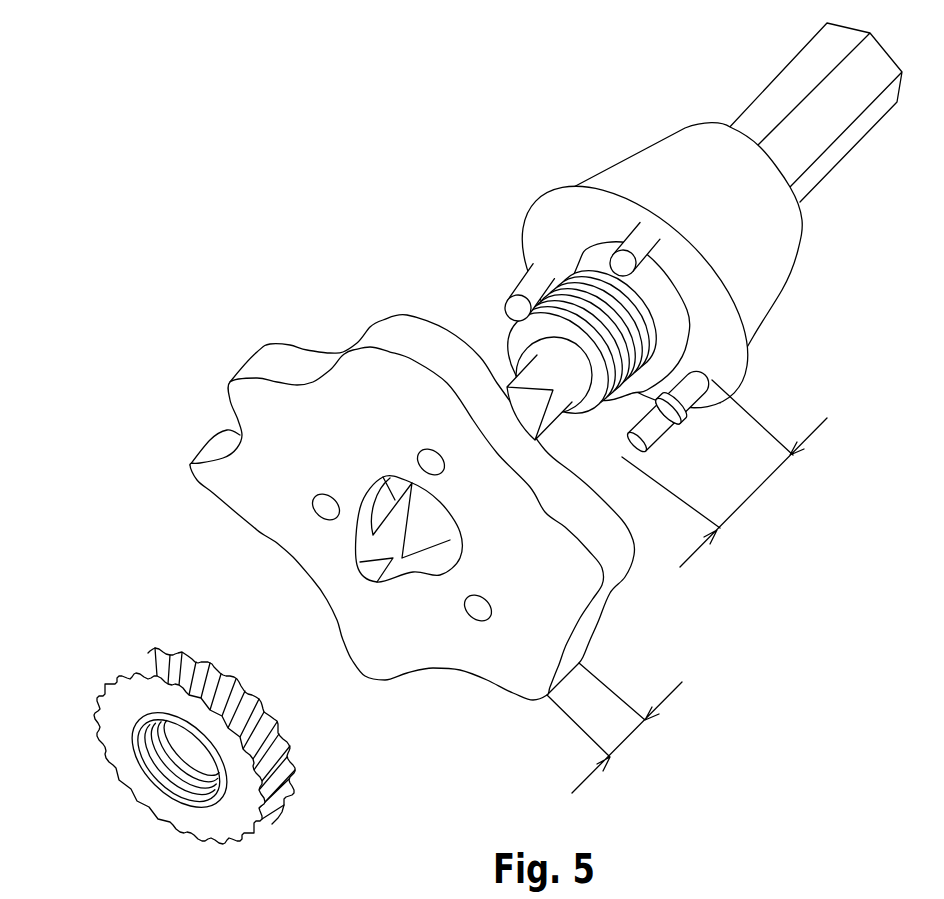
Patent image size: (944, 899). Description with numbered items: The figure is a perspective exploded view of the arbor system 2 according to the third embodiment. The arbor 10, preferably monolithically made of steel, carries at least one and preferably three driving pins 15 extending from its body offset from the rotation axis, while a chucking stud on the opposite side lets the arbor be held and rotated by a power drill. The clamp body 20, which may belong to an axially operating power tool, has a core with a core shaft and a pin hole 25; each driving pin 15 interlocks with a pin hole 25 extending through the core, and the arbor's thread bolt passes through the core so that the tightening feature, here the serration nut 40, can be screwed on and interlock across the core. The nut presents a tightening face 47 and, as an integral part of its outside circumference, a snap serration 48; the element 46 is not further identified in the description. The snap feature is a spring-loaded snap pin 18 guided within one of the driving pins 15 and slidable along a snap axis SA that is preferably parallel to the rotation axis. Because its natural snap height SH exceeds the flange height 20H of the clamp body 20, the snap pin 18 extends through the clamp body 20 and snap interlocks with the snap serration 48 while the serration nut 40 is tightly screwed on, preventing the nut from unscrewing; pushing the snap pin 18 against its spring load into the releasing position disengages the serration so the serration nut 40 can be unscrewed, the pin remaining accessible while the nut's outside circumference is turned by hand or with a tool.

The arbor system 2 is at (727, 645).
The arbor 10 is at (692, 295).
The driving pin 15 is at (693, 397).
The snap pin 18 is at (653, 440).
The snap axis SA is at (714, 363).
The snap height SH is at (724, 492).
The clamp body 20 is at (418, 537).
The pin hole 25 is at (480, 607).
The flange height 20H is at (614, 728).
The serration nut 40 is at (177, 712).
The threaded bore 46 is at (183, 757).
The tightening face 47 is at (180, 628).
The snap serration 48 is at (266, 810).